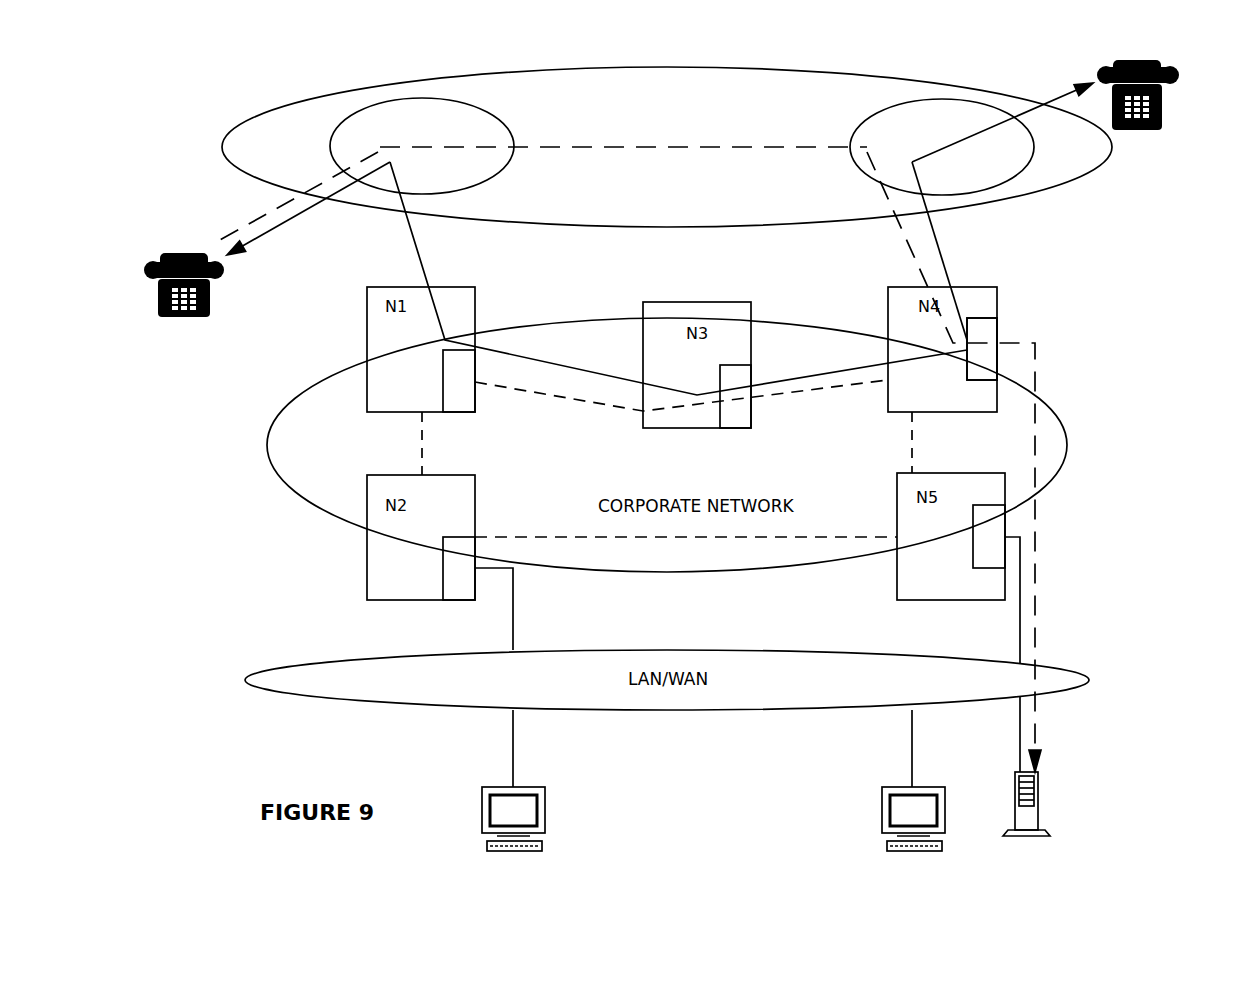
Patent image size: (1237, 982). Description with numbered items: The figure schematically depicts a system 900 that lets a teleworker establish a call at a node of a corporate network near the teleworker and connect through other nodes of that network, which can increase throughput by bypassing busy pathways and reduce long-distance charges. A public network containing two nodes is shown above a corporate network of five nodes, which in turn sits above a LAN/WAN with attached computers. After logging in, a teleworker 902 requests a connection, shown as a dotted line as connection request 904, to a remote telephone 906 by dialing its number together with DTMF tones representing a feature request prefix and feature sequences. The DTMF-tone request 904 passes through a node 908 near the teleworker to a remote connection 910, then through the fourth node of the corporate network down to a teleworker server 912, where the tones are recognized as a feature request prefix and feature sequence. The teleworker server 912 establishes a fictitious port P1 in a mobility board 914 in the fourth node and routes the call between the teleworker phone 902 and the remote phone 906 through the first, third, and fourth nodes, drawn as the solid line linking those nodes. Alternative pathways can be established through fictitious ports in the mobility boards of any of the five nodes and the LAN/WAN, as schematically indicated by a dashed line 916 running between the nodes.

The system 900 is at (1166, 598).
The teleworker 902 is at (175, 319).
The connection request 904 is at (663, 147).
The remote telephone 906 is at (1180, 88).
The node 908 is at (420, 127).
The remote connection 910 is at (941, 141).
The teleworker server 912 is at (1040, 802).
The mobility board 914 is at (982, 318).
The dashed line 916 is at (557, 397).
The fictitious port P1 is at (997, 335).